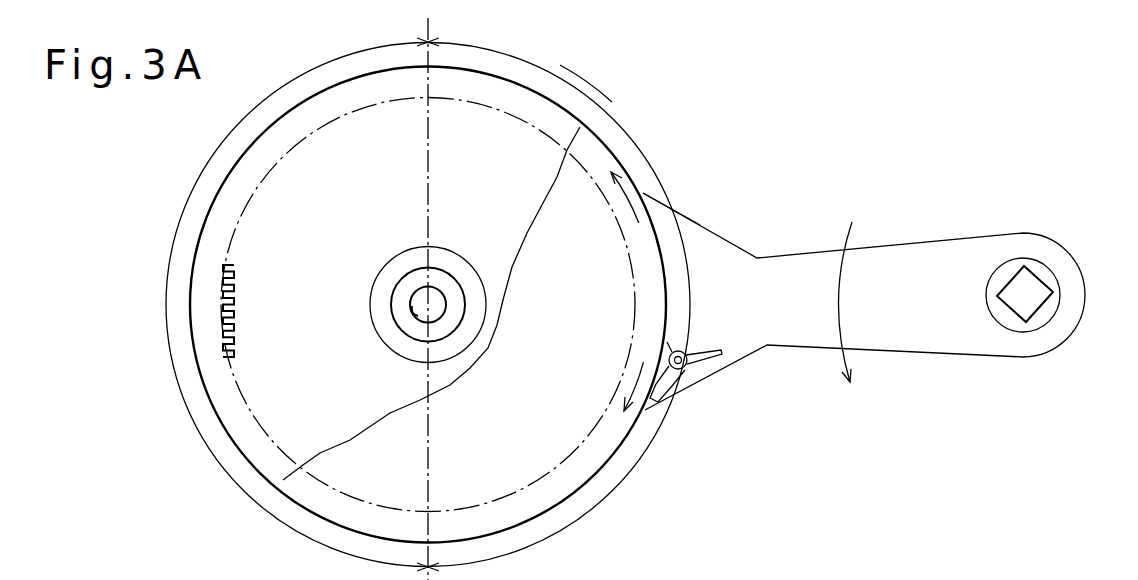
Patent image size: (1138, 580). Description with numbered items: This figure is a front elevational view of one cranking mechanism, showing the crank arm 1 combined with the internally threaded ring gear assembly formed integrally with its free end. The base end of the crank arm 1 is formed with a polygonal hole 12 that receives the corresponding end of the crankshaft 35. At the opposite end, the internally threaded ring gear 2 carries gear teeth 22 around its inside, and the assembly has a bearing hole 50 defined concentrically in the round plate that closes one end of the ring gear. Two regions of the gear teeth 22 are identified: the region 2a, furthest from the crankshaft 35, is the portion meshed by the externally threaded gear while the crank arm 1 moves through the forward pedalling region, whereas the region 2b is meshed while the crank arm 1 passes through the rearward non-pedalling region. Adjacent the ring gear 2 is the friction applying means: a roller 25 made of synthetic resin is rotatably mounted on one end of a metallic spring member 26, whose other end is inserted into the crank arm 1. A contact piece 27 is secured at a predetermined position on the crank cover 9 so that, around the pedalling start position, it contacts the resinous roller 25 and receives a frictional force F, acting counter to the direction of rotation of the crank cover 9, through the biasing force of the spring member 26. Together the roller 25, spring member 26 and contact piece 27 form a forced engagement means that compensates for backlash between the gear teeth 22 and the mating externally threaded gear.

The crank arm 1 is at (912, 268).
The internally threaded ring gear 2 is at (575, 116).
The region of the gear teeth 2a is at (420, 305).
The region of the gear teeth 2b is at (591, 94).
The crank cover 9 is at (645, 243).
The polygonal hole 12 is at (1022, 308).
The gear teeth 22 is at (234, 307).
The roller 25 is at (685, 368).
The spring member 26 is at (712, 355).
The contact piece 27 is at (672, 382).
The crankshaft 35 is at (1027, 286).
The bearing hole 50 is at (417, 317).
The frictional force F is at (638, 378).